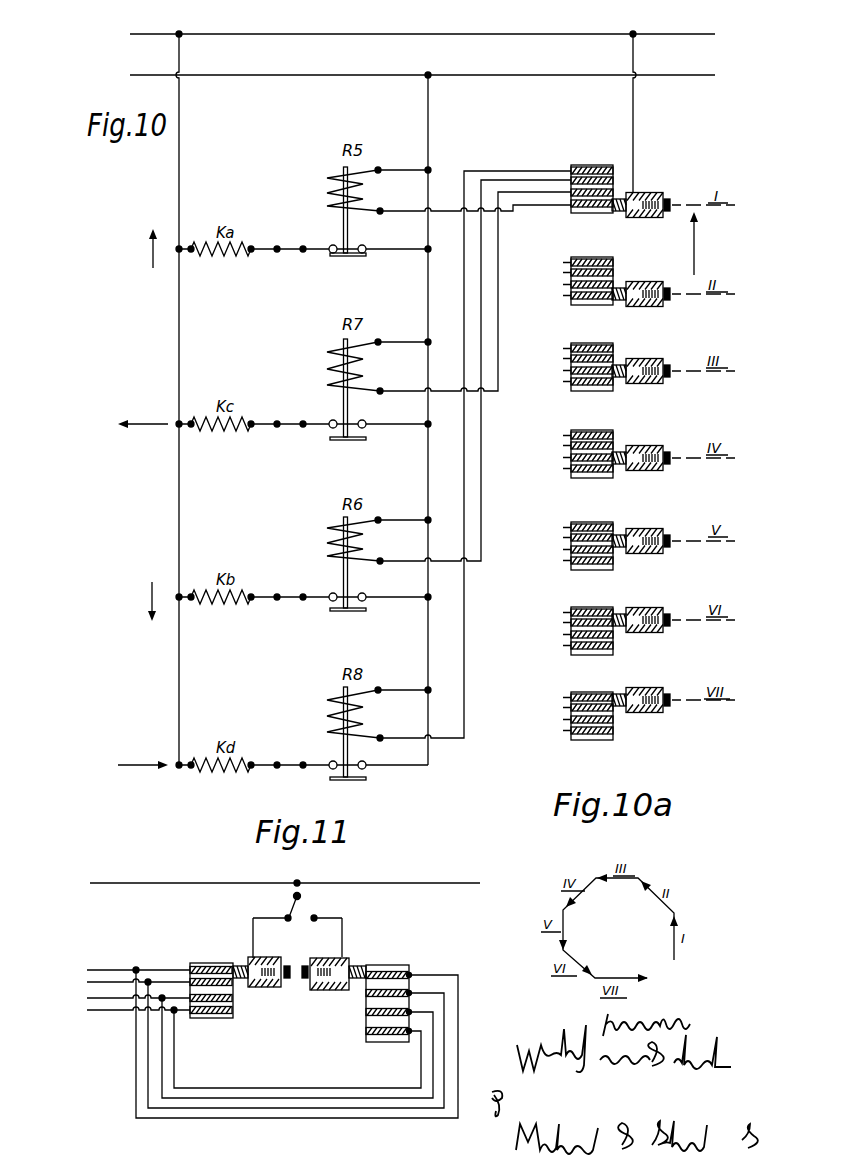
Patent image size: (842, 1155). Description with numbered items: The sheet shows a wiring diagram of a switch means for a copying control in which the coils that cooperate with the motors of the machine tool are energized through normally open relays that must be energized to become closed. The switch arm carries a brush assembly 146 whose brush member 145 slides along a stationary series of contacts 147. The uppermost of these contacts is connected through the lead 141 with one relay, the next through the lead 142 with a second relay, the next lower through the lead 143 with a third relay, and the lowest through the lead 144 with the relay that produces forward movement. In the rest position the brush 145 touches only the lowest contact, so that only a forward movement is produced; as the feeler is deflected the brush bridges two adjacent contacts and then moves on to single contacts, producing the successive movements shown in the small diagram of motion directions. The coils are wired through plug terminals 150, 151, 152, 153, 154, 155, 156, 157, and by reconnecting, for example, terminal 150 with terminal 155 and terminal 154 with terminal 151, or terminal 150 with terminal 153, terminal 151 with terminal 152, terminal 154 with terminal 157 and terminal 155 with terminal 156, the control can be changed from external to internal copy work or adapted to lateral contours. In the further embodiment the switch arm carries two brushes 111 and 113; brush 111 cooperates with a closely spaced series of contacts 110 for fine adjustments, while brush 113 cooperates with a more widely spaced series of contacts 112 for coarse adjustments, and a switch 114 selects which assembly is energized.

In FIG. 11, the series of contacts 110 is at (211, 963).
In FIG. 11, the brush 111 is at (262, 1002).
In FIG. 11, the series of contacts 112 is at (400, 965).
In FIG. 11, the brush 113 is at (338, 1002).
In FIG. 11, the switch 114 is at (306, 912).
In FIG. 10, the lead 141 is at (464, 263).
In FIG. 10, the lead 142 is at (569, 275).
In FIG. 10, the lead 143 is at (465, 680).
In FIG. 10, the lead 144 is at (546, 211).
In FIG. 10, the brush member 145 is at (621, 213).
In FIG. 10, the brush assembly 146 is at (648, 193).
In FIG. 10, the series of contacts 147 is at (594, 165).
In FIG. 10, the terminal 150 is at (270, 261).
In FIG. 10, the terminal 151 is at (306, 261).
In FIG. 10, the terminal 152 is at (270, 437).
In FIG. 10, the terminal 153 is at (306, 437).
In FIG. 10, the terminal 154 is at (270, 610).
In FIG. 10, the terminal 155 is at (306, 610).
In FIG. 10, the terminal 156 is at (270, 778).
In FIG. 10, the terminal 157 is at (307, 778).